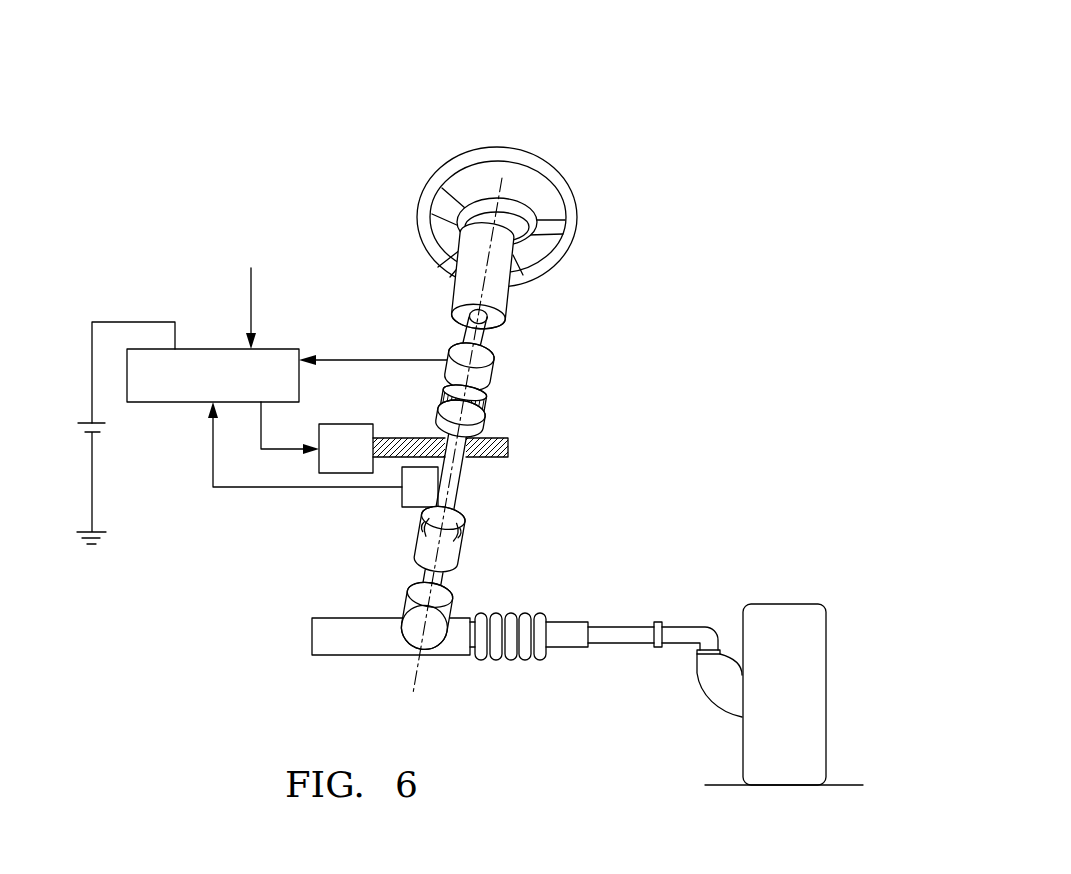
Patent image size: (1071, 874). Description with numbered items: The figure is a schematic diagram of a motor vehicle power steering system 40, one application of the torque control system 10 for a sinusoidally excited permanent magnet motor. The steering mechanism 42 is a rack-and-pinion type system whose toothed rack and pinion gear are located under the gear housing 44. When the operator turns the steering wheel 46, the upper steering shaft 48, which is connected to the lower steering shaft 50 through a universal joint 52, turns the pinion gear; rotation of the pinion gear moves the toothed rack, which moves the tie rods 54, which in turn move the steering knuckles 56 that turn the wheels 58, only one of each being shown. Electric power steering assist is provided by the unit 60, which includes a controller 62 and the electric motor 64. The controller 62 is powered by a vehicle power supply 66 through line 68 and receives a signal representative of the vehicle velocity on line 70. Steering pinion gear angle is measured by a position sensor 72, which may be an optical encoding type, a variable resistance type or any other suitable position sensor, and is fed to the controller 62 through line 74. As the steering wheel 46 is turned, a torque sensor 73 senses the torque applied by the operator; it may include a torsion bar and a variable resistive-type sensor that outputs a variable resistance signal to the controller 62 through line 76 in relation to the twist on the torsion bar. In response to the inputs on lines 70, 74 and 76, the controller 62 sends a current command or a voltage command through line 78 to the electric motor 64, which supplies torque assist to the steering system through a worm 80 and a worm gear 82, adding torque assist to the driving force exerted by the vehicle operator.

The system for controlling the torque of a sinusoidally excited permanent magnet mot 10 is at (653, 343).
The motor vehicle power steering system 40 is at (578, 88).
The steering mechanism 42 is at (522, 615).
The gear housing 44 is at (408, 603).
The steering wheel 46 is at (545, 175).
The upper steering shaft 48 is at (485, 317).
The lower steering shaft 50 is at (440, 577).
The universal joint 52 is at (457, 530).
The tie rod 54 is at (620, 635).
The steering knuckle 56 is at (715, 690).
The wheel 58 is at (803, 610).
The electric power steering assist unit 60 is at (342, 315).
The controller 62 is at (227, 348).
The electric motor 64 is at (338, 425).
The vehicle power supply 66 is at (83, 422).
The line 68 is at (110, 322).
The line 70 is at (252, 308).
The position sensor 72 is at (402, 498).
The torque sensor 73 is at (488, 362).
The line 74 is at (303, 490).
The line 76 is at (363, 358).
The line 78 is at (283, 450).
The worm 80 is at (507, 445).
The worm gear 82 is at (468, 410).